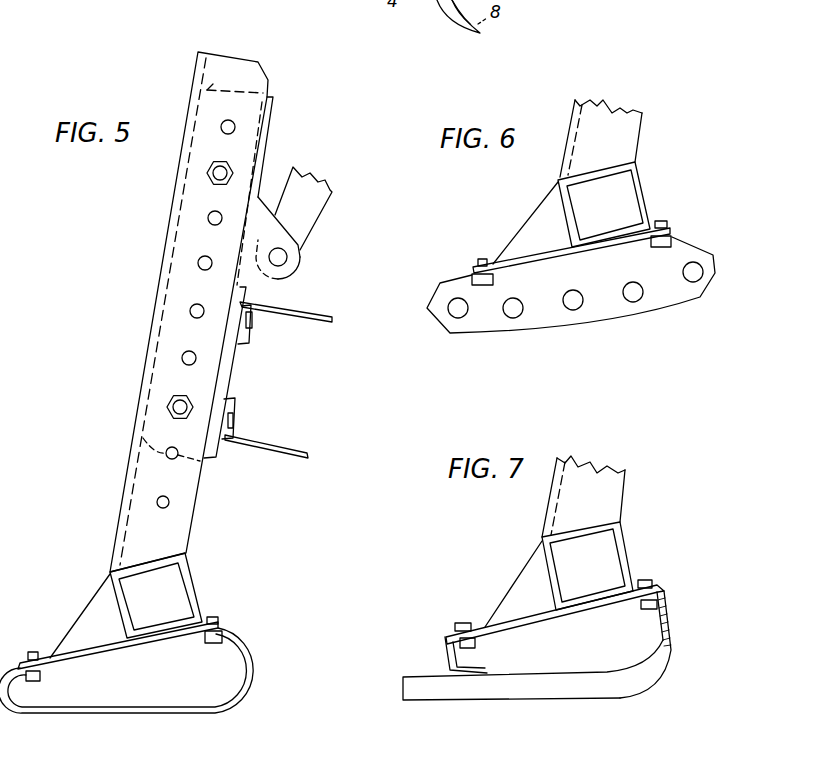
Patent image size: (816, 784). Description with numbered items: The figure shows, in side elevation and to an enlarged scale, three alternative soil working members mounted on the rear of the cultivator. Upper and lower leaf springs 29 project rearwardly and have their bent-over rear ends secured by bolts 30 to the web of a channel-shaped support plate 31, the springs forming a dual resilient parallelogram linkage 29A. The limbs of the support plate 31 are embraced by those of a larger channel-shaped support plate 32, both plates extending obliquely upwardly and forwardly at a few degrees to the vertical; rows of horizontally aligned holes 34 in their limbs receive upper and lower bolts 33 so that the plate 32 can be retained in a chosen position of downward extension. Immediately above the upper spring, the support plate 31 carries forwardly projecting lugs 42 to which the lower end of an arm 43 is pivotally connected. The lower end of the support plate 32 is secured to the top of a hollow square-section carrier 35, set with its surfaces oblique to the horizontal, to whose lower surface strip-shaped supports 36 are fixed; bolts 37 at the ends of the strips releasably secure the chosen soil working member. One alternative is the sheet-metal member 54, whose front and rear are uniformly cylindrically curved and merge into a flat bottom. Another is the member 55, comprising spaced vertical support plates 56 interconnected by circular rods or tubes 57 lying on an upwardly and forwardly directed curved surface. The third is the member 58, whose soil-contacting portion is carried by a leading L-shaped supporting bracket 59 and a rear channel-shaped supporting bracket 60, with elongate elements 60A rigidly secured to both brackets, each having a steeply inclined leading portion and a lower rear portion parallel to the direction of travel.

In FIG. 5, the leaf springs 29 is at (319, 313).
In FIG. 5, the dual resilient parallelogram linkage 29A is at (312, 420).
In FIG. 5, the bolts 30 is at (252, 330).
In FIG. 5, the support plate 31 is at (275, 110).
In FIG. 5, the support plate 32 is at (229, 62).
In FIG. 6, the support plate 32 is at (571, 103).
In FIG. 7, the support plate 32 is at (572, 458).
In FIG. 5, the bolts 33 is at (207, 173).
In FIG. 5, the holes 34 is at (214, 226).
In FIG. 6, the holes 34 is at (614, 120).
In FIG. 7, the holes 34 is at (593, 480).
In FIG. 5, the carrier 35 is at (191, 568).
In FIG. 6, the carrier 35 is at (640, 173).
In FIG. 7, the carrier 35 is at (622, 533).
In FIG. 5, the strip-shaped supports 36 is at (100, 650).
In FIG. 6, the strip-shaped supports 36 is at (555, 257).
In FIG. 7, the strip-shaped supports 36 is at (492, 613).
In FIG. 5, the bolts 37 is at (34, 652).
In FIG. 6, the bolts 37 is at (662, 221).
In FIG. 7, the bolts 37 is at (648, 579).
In FIG. 5, the lugs 42 is at (289, 258).
In FIG. 5, the arms 43 is at (322, 211).
In FIG. 5, the elongate soil working member 54 is at (262, 667).
In FIG. 6, the elongate soil working member 55 is at (660, 310).
In FIG. 6, the vertical support plates 56 is at (600, 323).
In FIG. 6, the rods or tubes 57 is at (623, 286).
In FIG. 7, the elongate soil working member 58 is at (658, 655).
In FIG. 7, the supporting bracket 59 is at (648, 612).
In FIG. 7, the supporting bracket 60 is at (443, 640).
In FIG. 7, the elongate elements 60A is at (550, 676).